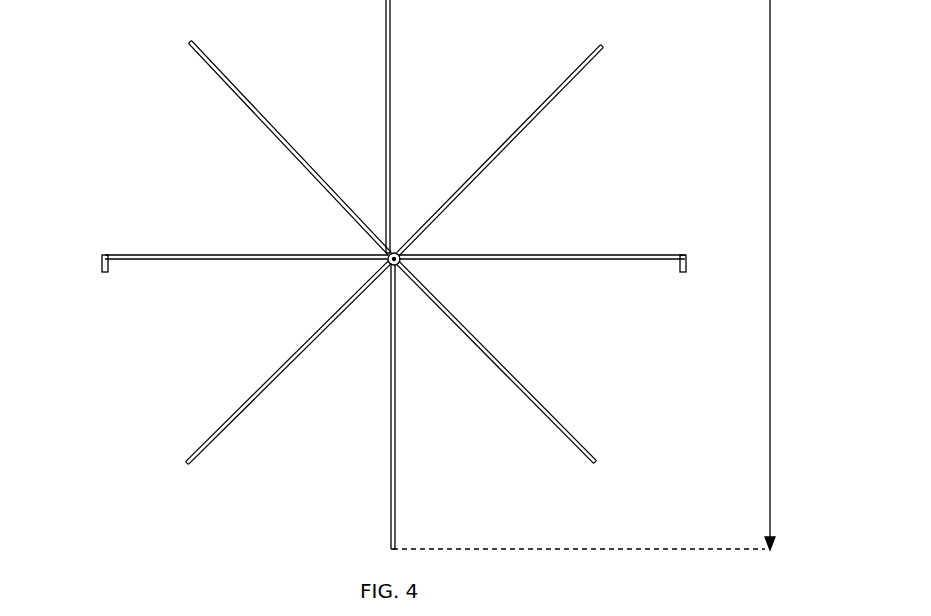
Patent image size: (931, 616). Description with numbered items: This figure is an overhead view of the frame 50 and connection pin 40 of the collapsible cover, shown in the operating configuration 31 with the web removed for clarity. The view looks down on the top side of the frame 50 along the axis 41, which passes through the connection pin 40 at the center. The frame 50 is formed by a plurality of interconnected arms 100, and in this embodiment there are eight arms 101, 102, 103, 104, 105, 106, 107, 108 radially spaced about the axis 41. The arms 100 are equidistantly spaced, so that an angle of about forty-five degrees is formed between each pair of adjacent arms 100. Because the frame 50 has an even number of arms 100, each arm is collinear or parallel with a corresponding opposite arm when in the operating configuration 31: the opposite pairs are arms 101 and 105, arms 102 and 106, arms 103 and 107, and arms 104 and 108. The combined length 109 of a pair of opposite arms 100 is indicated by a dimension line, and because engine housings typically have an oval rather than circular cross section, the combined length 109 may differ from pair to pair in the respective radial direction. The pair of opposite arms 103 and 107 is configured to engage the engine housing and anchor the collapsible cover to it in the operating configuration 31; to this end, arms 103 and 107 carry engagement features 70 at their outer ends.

The arms 100 is at (90, 457).
The operating configuration 31 is at (217, 513).
The connection pin 40 is at (391, 264).
The axis 41 is at (397, 264).
The frame 50 is at (202, 57).
The engagement features 70 is at (105, 273).
The arm 101 is at (390, 25).
The arm 102 is at (550, 101).
The arm 103 is at (597, 260).
The arm 104 is at (548, 412).
The arm 105 is at (391, 477).
The arm 106 is at (222, 428).
The arm 107 is at (155, 255).
The arm 108 is at (247, 97).
The combined length 109 is at (770, 236).